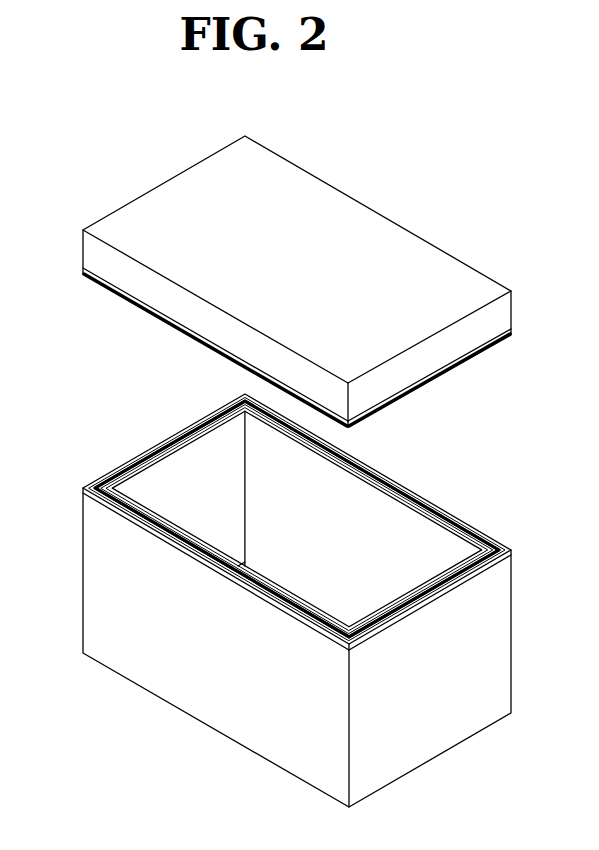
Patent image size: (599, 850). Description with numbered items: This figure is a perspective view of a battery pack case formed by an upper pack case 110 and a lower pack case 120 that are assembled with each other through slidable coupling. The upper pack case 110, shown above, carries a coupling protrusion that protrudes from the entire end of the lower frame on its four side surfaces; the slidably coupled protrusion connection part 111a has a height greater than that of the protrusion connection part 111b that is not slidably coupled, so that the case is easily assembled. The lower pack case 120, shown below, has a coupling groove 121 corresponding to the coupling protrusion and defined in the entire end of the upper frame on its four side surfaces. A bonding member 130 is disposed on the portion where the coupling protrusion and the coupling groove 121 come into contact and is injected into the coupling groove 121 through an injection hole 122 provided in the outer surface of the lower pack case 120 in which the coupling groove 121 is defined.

The upper pack case 110 is at (410, 233).
The protrusion connection part 111a is at (110, 288).
The protrusion connection part 111b is at (430, 376).
The lower pack case 120 is at (435, 742).
The coupling groove 121 is at (163, 441).
The injection hole 122 is at (95, 484).
The bonding member 130 is at (490, 534).